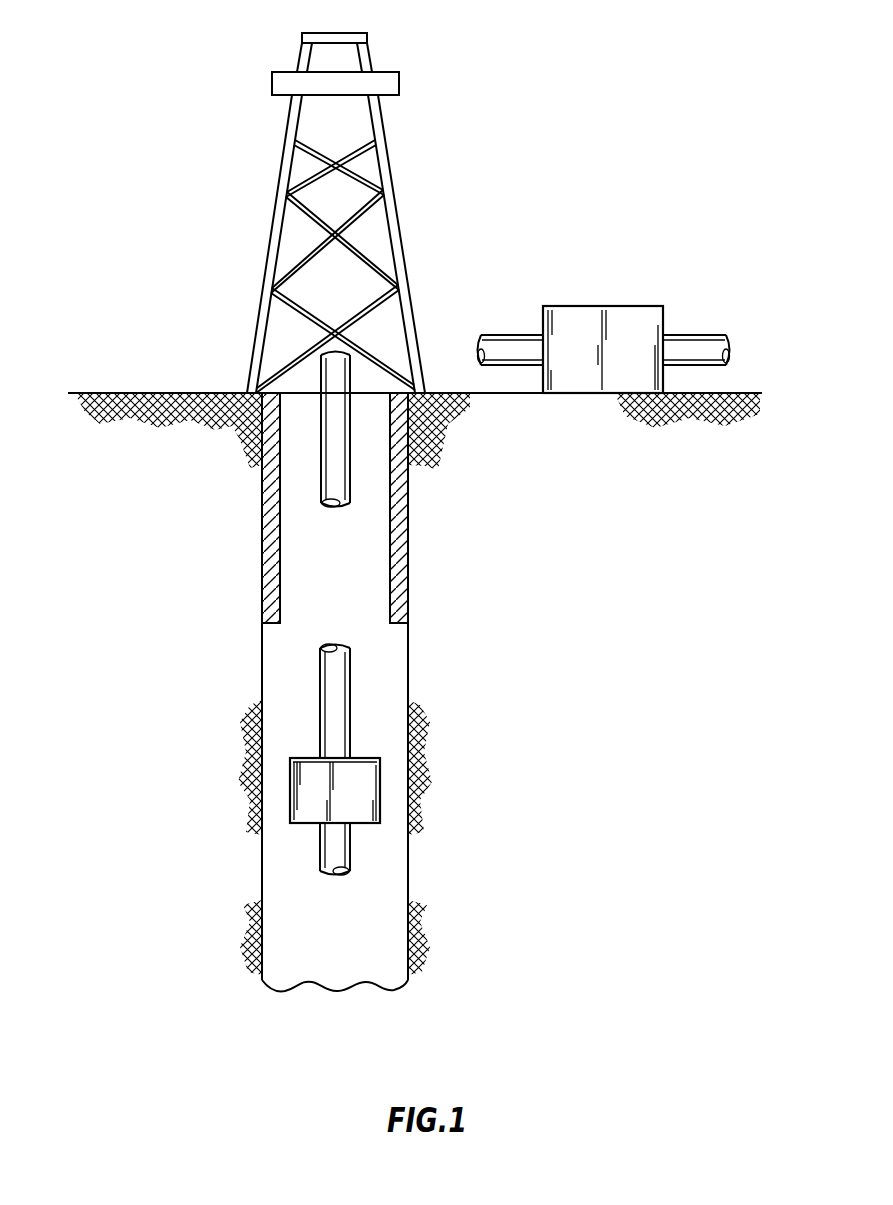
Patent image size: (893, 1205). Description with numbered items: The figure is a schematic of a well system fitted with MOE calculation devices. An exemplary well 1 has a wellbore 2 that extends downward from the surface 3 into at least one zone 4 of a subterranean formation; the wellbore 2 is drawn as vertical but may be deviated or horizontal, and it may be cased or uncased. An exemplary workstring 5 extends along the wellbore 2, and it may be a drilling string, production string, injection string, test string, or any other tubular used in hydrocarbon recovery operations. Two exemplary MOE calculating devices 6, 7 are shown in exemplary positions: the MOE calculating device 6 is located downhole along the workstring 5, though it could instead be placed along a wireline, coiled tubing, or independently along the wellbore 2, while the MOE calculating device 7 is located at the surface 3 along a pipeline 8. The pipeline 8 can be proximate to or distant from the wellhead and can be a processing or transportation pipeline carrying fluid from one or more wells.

The well 1 is at (580, 126).
The wellbore 2 is at (410, 648).
The surface 3 is at (90, 392).
The zone of a subterranean formation 4 is at (425, 757).
The workstring 5 is at (351, 678).
The MOE calculating device 6 is at (290, 785).
The MOE calculating device 7 is at (632, 306).
The pipeline 8 is at (712, 335).